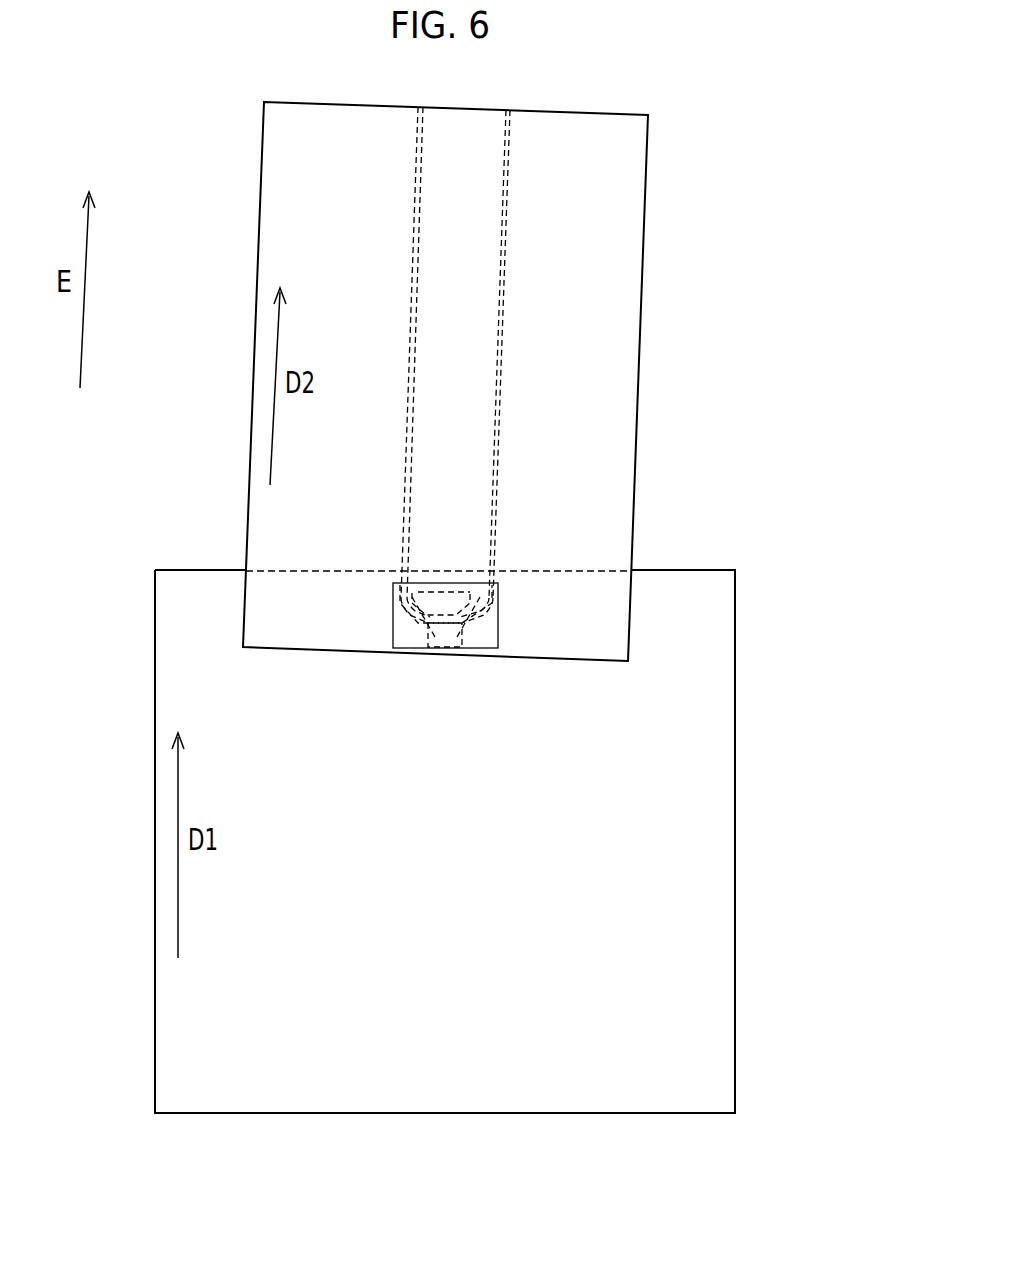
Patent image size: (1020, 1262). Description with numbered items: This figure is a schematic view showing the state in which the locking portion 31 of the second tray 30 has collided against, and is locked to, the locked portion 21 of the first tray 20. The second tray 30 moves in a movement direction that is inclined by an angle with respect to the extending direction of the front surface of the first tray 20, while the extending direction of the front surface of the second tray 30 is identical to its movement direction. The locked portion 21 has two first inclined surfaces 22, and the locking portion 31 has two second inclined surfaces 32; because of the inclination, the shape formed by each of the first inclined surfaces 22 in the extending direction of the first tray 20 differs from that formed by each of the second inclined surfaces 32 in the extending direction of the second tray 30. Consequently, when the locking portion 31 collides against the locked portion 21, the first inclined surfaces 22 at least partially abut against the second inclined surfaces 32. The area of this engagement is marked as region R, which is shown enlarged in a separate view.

The first tray 20 is at (737, 718).
The second tray 30 is at (645, 238).
The locked portion 21 is at (465, 600).
The first inclined surfaces 22 is at (435, 610).
The locking portion 31 is at (505, 635).
The second inclined surfaces 32 is at (410, 640).
The region R is at (392, 618).